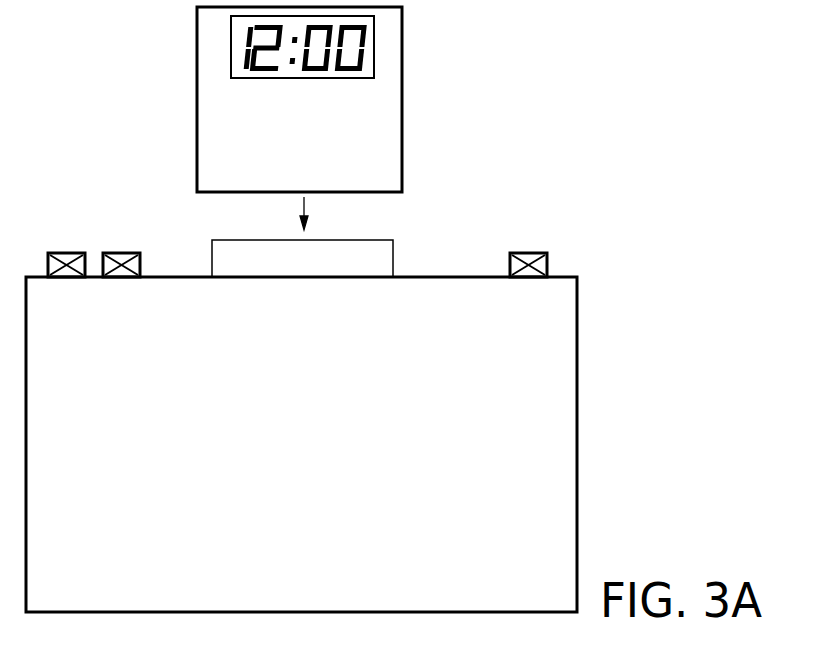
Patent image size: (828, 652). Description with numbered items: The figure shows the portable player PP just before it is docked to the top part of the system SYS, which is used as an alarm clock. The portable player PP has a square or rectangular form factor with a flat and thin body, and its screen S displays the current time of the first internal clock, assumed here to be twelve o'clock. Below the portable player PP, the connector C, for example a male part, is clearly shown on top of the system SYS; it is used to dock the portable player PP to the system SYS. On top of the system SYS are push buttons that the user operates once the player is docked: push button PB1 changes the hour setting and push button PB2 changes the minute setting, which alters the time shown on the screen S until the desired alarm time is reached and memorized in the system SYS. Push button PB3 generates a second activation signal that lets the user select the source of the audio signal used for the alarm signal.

The screen S is at (375, 52).
The portable player PP is at (402, 147).
The connector C is at (375, 240).
The system SYS is at (578, 443).
The push button PB1 is at (65, 253).
The push button PB2 is at (122, 253).
The push button PB3 is at (533, 253).